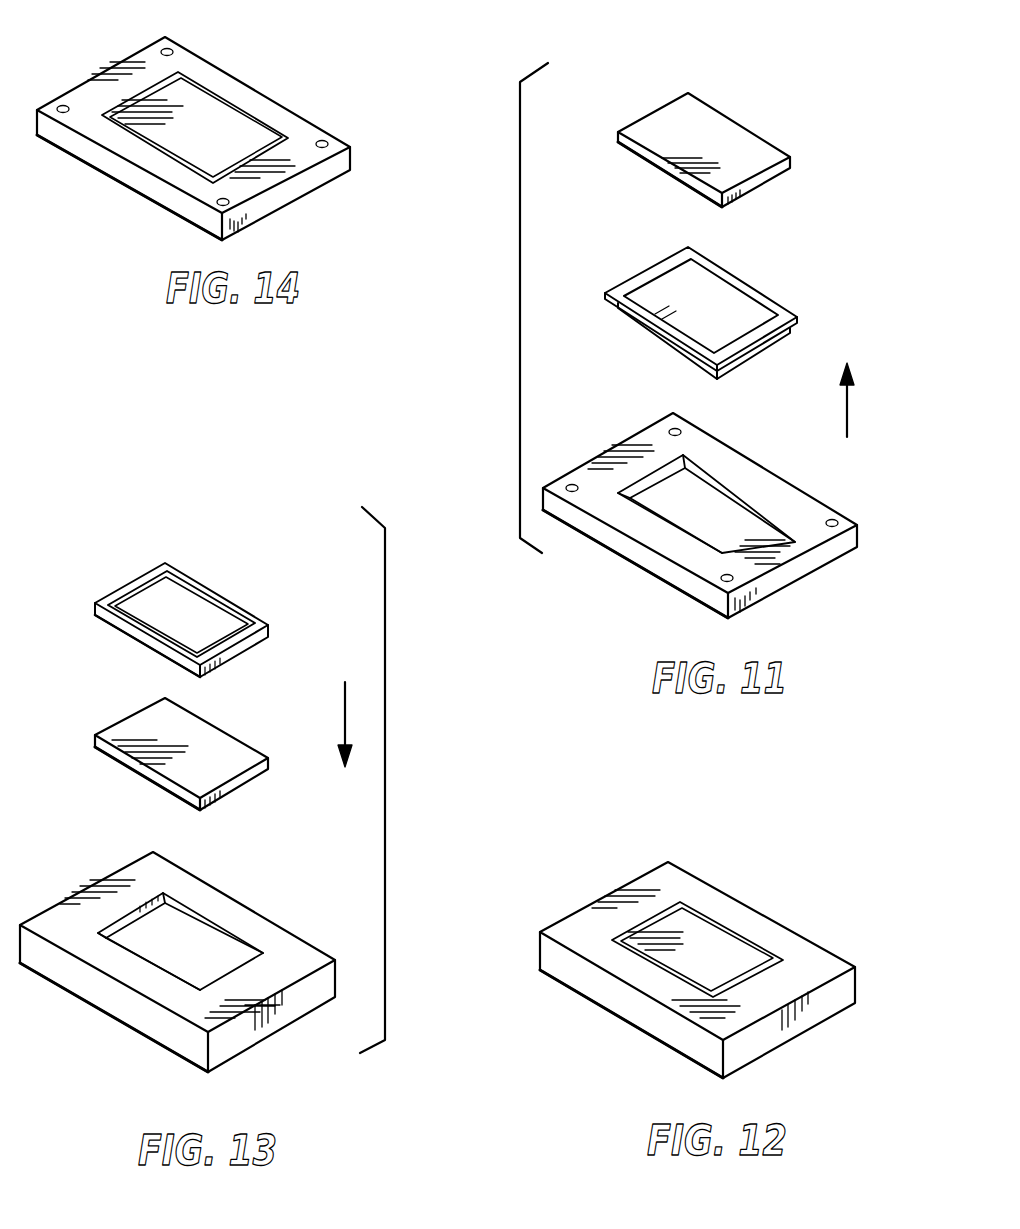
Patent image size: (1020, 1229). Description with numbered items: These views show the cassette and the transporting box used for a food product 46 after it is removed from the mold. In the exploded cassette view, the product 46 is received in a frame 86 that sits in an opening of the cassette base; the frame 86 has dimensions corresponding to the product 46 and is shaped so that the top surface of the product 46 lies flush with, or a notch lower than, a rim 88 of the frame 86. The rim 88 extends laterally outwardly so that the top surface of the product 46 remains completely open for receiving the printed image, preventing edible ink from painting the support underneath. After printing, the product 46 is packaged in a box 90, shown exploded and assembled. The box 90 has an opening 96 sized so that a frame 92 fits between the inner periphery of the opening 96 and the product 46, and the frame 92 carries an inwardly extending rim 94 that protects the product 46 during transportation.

In FIG. 11, the product 46 is at (757, 155).
In FIG. 11, the frame 86 is at (753, 309).
In FIG. 11, the rim 88 is at (727, 272).
In FIG. 14, the box 90 is at (344, 119).
In FIG. 13, the box 90 is at (334, 936).
In FIG. 13, the frame 92 is at (225, 598).
In FIG. 13, the inwardly extending rim 94 is at (165, 563).
In FIG. 13, the opening 96 is at (188, 938).